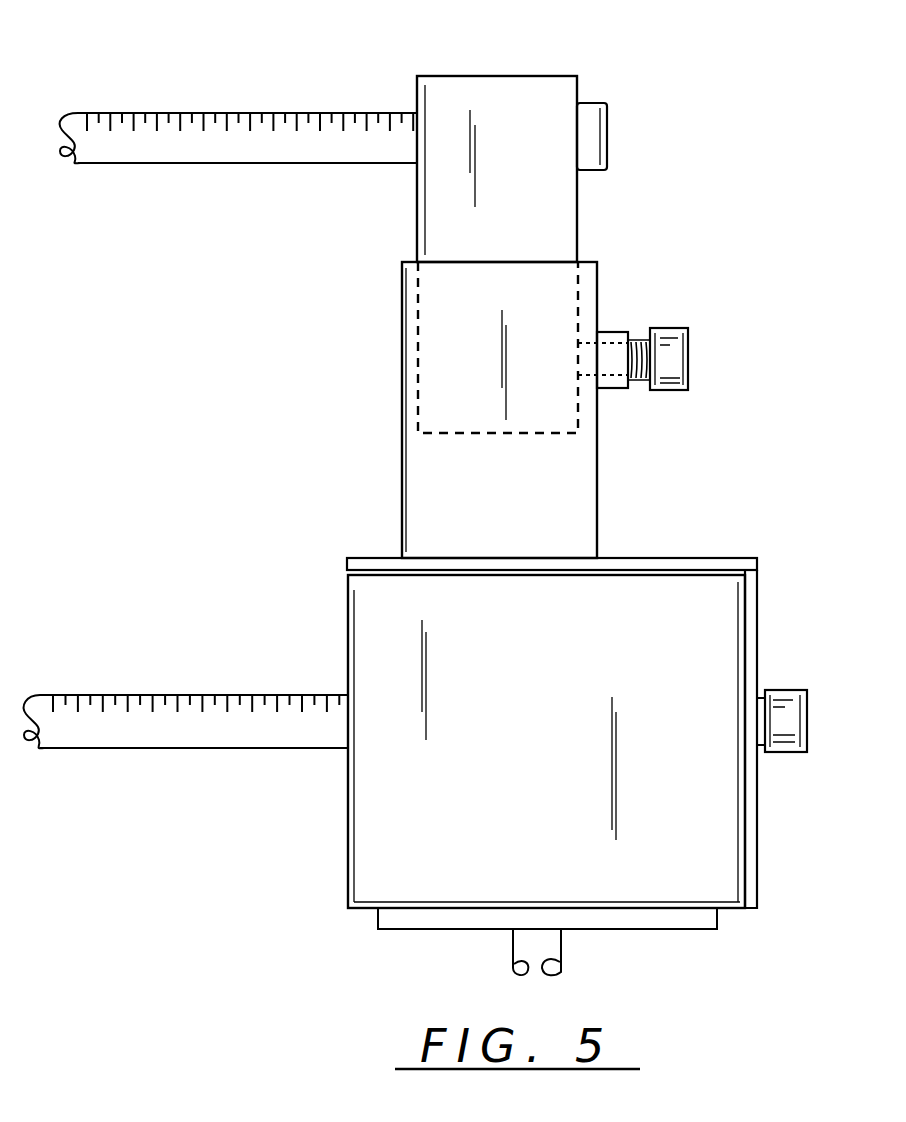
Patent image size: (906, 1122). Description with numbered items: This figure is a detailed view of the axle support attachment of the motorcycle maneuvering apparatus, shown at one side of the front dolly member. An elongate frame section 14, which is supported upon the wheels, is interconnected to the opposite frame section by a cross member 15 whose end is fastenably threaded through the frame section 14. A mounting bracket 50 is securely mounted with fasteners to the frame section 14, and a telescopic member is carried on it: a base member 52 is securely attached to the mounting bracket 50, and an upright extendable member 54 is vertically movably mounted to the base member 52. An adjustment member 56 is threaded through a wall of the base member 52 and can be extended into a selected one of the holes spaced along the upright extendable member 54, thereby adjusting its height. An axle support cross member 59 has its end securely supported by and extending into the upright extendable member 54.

The elongate frame section 14 is at (366, 880).
The cross member 15 is at (248, 732).
The mounting bracket 50 is at (738, 562).
The base member 52 is at (582, 492).
The upright extendable member 54 is at (556, 222).
The adjustment member 56 is at (672, 362).
The axle support cross member 59 is at (259, 112).